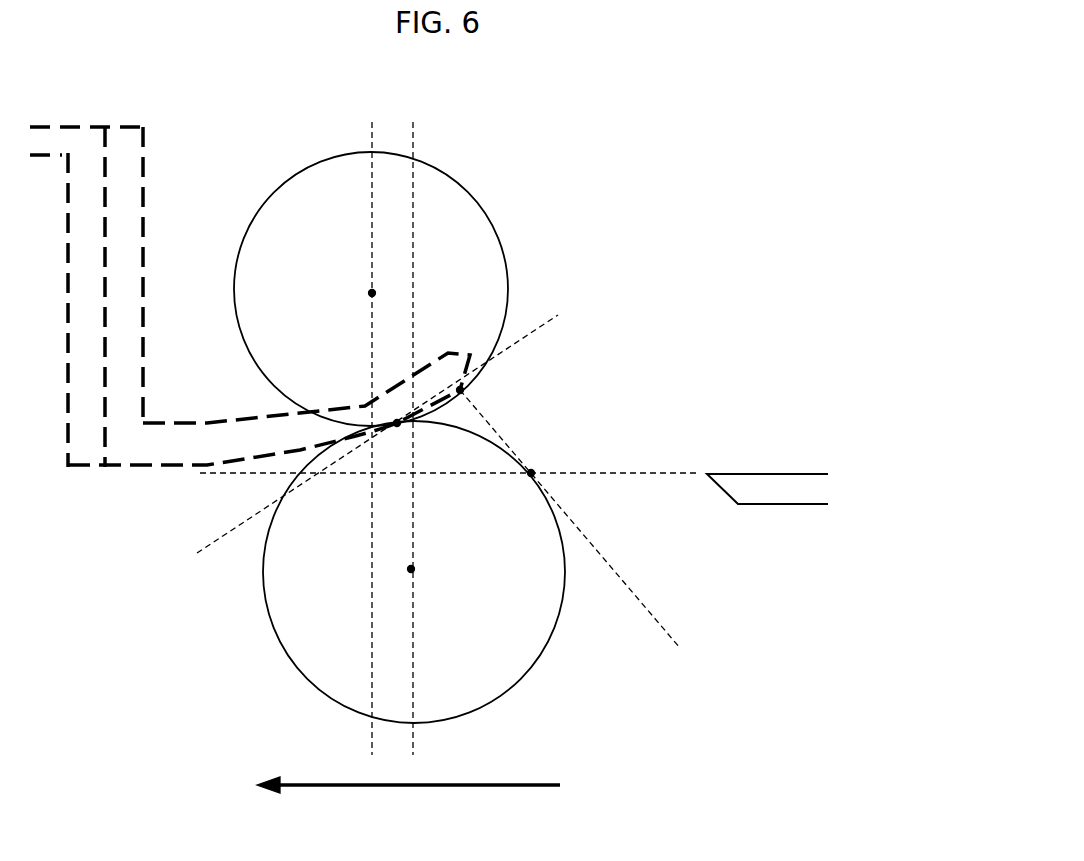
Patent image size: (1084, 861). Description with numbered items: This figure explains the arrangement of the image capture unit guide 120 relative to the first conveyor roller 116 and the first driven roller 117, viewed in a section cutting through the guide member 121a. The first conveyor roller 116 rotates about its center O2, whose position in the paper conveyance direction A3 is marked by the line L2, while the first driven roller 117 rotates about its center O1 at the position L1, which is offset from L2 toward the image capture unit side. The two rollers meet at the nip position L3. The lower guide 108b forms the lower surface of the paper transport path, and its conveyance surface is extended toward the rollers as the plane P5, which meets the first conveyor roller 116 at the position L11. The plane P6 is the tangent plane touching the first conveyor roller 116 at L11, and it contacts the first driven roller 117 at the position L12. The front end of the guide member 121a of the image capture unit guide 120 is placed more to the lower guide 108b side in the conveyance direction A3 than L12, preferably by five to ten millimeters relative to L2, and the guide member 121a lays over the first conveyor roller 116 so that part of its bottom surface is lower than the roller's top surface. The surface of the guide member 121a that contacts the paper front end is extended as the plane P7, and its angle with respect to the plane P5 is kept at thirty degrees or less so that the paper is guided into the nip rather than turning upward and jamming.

The first conveyor roller 116 is at (547, 627).
The first driven roller 117 is at (470, 223).
The image capture unit guide 120 is at (67, 136).
The guide member 121a is at (160, 443).
The lower guide 108b is at (760, 471).
The position of the center O1 L1 is at (372, 142).
The position of the center O2 L2 is at (415, 142).
The nip position L3 is at (393, 420).
The position where extended plane P5 and first conveyor roller contact L11 is at (532, 472).
The position where tangent plane P6 and first driven roller contact L12 is at (462, 391).
The extended plane of the conveyance surface of the lower guide P5 is at (684, 470).
The tangent plane P6 is at (680, 645).
The extended plane of the guide member surface P7 is at (553, 318).
The center of the first driven roller O1 is at (372, 293).
The center of the first conveyor roller O2 is at (411, 570).
The conveyance direction of paper A3 is at (408, 804).